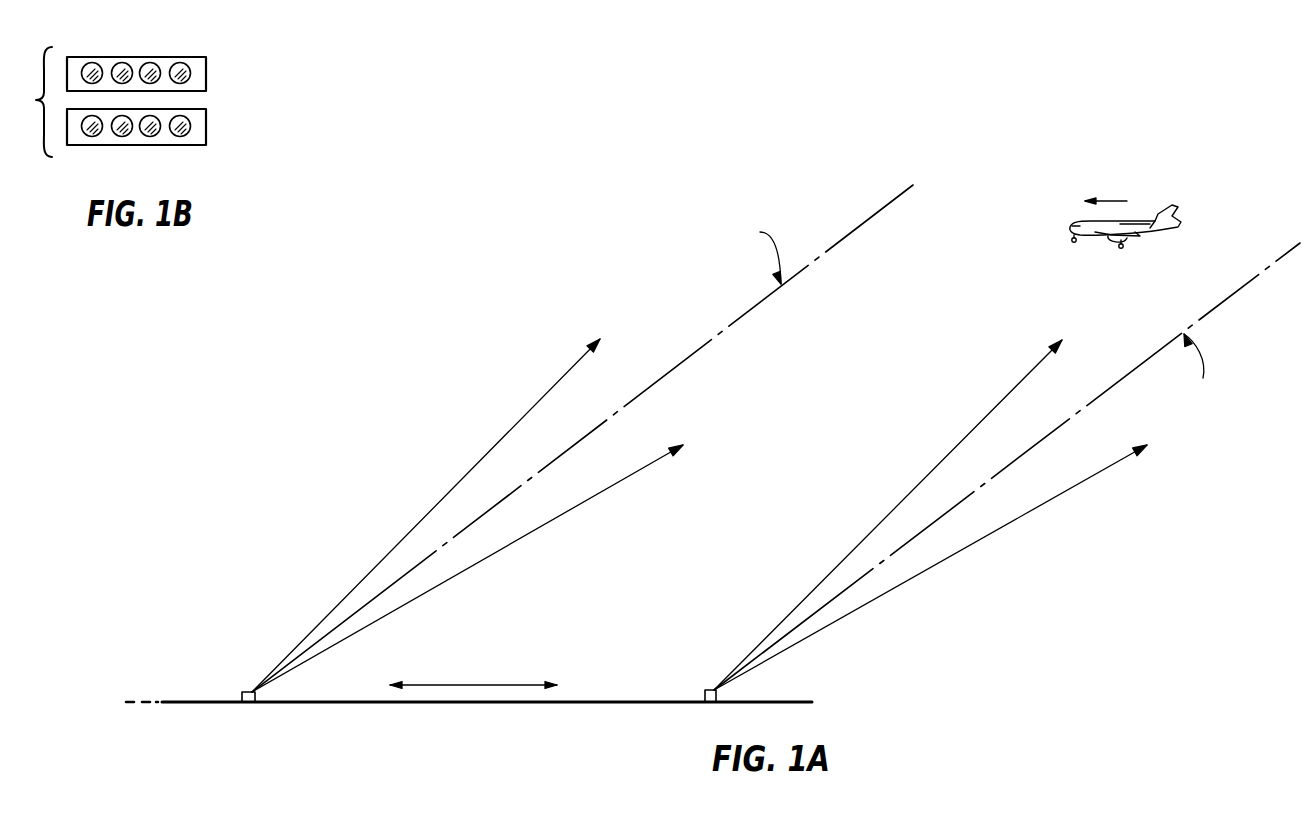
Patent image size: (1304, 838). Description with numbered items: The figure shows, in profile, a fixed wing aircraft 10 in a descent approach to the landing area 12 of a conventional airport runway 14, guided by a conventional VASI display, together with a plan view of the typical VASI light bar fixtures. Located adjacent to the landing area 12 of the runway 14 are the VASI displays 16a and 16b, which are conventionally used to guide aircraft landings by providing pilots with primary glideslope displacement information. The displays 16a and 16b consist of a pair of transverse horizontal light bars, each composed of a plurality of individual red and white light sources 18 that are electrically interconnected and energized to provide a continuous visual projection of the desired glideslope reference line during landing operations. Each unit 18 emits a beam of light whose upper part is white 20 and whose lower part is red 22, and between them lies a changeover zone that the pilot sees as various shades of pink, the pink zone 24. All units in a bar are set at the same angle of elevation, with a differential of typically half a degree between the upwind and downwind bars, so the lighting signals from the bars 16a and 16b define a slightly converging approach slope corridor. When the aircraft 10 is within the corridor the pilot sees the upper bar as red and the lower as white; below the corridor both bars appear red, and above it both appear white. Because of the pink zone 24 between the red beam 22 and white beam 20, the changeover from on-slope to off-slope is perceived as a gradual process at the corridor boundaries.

In FIG. 1A, the fixed wing aircraft 10 is at (1146, 233).
In FIG. 1A, the landing area 12 is at (503, 686).
In FIG. 1A, the runway 14 is at (793, 701).
In FIG. 1B, the VASI display 16a is at (207, 72).
In FIG. 1A, the VASI display 16a is at (242, 692).
In FIG. 1B, the VASI display 16b is at (207, 126).
In FIG. 1A, the VASI display 16b is at (705, 689).
In FIG. 1B, the light sources 18 is at (152, 70).
In FIG. 1A, the white beam 20 is at (462, 499).
In FIG. 1A, the red beam 22 is at (498, 528).
In FIG. 1A, the pink zone 24 is at (747, 313).